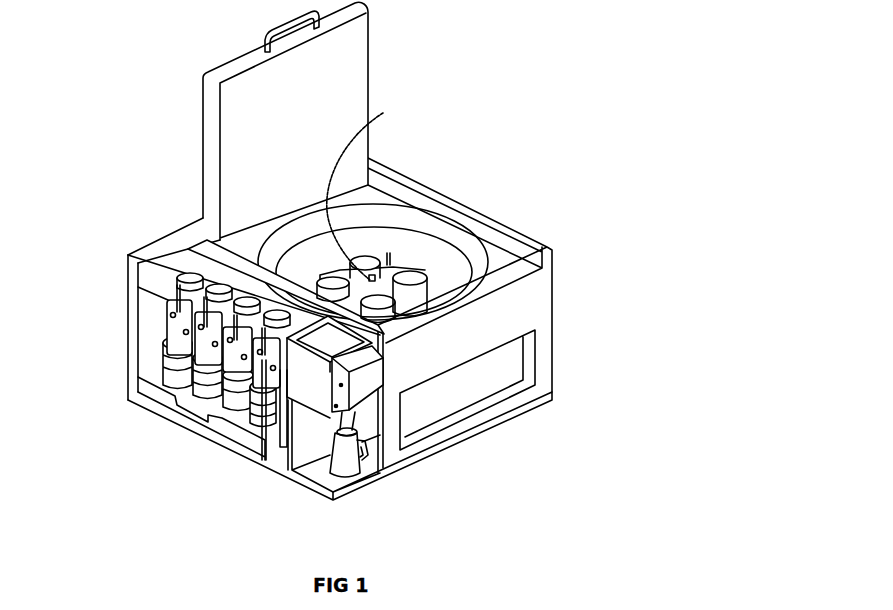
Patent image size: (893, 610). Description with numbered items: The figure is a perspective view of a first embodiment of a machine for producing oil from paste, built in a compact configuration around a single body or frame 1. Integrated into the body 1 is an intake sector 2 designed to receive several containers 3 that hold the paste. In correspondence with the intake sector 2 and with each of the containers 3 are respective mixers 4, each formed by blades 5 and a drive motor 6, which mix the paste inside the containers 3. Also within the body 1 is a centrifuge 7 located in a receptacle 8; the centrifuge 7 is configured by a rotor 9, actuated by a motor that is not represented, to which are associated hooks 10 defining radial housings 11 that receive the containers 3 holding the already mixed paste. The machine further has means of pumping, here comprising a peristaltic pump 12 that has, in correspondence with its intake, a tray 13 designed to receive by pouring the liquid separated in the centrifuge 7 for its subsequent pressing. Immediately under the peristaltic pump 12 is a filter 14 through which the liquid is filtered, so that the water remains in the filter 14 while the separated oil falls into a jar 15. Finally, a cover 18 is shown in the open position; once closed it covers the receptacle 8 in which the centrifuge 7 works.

The body or frame 1 is at (532, 306).
The intake sector 2 is at (201, 469).
The containers 3 is at (210, 405).
The mixers 4 is at (112, 257).
The blades 5 is at (178, 325).
The drive motor 6 is at (177, 287).
The centrifuge 7 is at (376, 222).
The receptacle 8 is at (393, 234).
The rotor 9 is at (392, 258).
The hooks 10 is at (430, 262).
The radial housings 11 is at (374, 187).
The peristaltic pump 12 is at (383, 375).
The tray 13 is at (365, 342).
The filter 14 is at (382, 378).
The jar 15 is at (352, 468).
The cover 18 is at (313, 113).